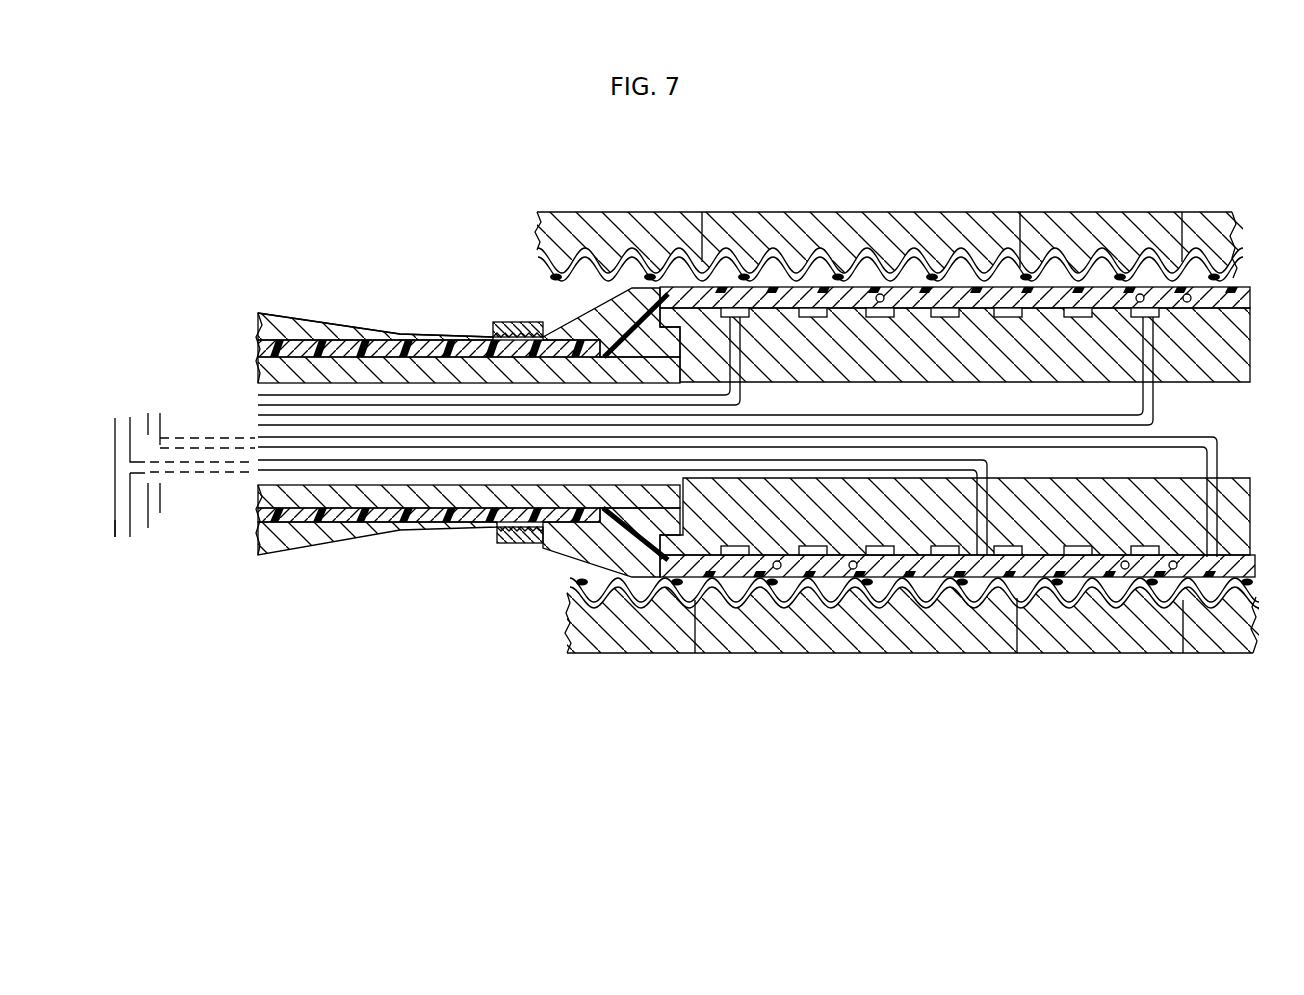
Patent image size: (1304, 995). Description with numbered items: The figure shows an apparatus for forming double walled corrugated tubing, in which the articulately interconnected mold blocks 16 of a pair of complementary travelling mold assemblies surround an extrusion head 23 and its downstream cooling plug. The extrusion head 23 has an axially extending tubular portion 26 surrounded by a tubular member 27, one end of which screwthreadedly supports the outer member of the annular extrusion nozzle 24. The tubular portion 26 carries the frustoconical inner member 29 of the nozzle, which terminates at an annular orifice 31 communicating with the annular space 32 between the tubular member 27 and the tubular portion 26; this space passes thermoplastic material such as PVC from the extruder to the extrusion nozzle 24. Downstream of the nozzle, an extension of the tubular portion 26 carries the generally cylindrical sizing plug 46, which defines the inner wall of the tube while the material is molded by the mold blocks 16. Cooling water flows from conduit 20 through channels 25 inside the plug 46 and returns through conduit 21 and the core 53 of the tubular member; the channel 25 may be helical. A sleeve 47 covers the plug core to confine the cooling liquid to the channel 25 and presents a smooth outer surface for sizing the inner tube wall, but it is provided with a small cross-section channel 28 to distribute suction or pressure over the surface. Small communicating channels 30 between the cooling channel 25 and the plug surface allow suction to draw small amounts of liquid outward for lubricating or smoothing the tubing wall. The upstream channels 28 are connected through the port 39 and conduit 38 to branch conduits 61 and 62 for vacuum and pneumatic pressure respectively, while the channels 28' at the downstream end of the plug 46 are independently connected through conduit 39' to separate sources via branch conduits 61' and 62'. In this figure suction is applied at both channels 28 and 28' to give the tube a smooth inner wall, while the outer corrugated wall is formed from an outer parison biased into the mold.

The mold blocks 16 is at (545, 235).
The conduit 20 is at (508, 400).
The conduit 21 is at (1156, 402).
The extrusion head 23 is at (268, 305).
The extrusion nozzle 24 is at (660, 625).
The cooling channel 25 is at (1015, 320).
The tubular portion 26 is at (355, 370).
The tubular member 27 is at (372, 528).
The suction or pressure channel 28 is at (661, 513).
The downstream suction or pressure channel 28' is at (890, 427).
The inner member of extrusion nozzle 29 is at (578, 292).
The communicating channels 30 is at (738, 580).
The annular orifice 31 is at (655, 275).
The annular space 32 is at (445, 350).
The suction/pressure conduit 38 is at (940, 460).
The suction or pressure port 39 is at (955, 502).
The conduit 39' is at (740, 570).
The sizing plug 46 is at (930, 345).
The sleeve 47 is at (1087, 580).
The core 53 is at (262, 340).
The branch conduit 61 is at (103, 465).
The branch conduit 61' is at (192, 427).
The branch conduit 62 is at (103, 541).
The branch conduit 62' is at (192, 514).